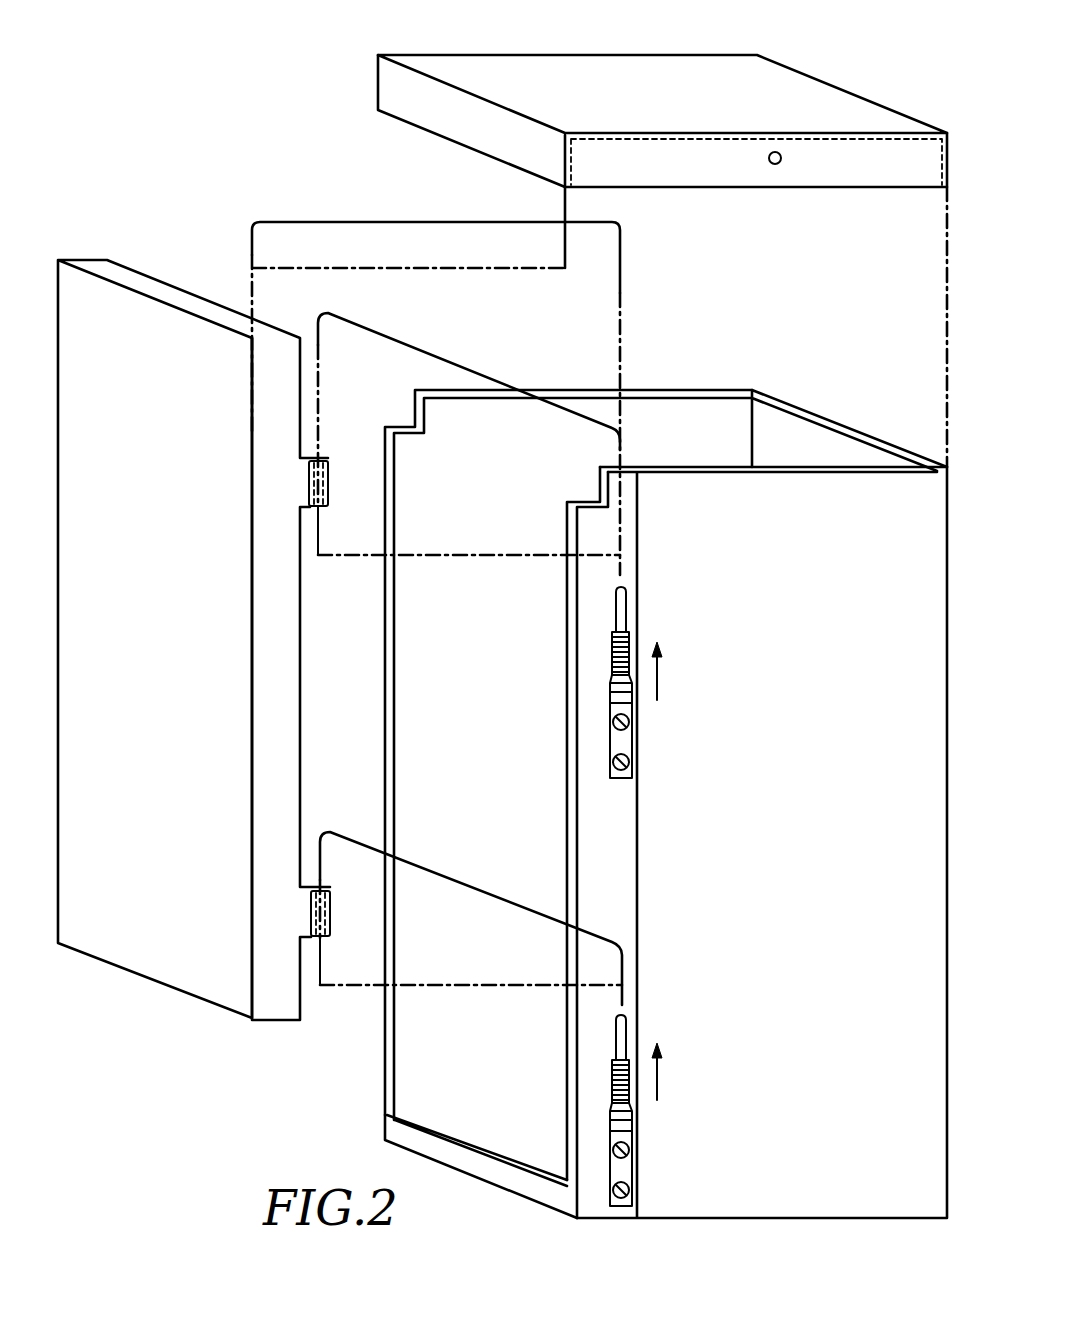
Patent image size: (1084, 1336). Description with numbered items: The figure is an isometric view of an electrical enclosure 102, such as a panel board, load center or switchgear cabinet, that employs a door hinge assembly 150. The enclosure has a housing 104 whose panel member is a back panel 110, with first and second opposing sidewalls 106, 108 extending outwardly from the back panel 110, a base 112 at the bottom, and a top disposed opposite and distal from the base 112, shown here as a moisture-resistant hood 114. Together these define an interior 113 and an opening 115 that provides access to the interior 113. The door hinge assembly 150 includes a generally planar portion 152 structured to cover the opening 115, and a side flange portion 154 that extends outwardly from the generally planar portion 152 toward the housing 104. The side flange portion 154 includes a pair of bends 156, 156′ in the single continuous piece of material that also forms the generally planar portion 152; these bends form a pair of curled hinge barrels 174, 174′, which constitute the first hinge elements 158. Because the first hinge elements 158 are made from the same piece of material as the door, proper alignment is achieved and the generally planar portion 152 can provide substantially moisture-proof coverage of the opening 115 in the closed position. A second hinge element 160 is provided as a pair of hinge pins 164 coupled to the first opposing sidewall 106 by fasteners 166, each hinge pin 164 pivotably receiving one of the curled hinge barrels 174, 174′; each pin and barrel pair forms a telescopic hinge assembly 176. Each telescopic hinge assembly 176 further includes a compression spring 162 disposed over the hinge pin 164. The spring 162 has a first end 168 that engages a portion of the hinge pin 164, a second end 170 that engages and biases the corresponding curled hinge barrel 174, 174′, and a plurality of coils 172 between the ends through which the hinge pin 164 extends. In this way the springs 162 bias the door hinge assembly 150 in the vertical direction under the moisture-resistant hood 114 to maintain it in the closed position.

The electrical enclosure 102 is at (734, 1271).
The housing 104 is at (857, 1195).
The first opposing sidewall 106 is at (808, 604).
The second opposing sidewall 108 is at (466, 496).
The back panel 110 is at (827, 420).
The base 112 is at (675, 1220).
The interior 113 is at (545, 818).
The moisture-resistant hood 114 is at (588, 77).
The opening 115 is at (396, 1048).
The door hinge assembly 150 is at (444, 222).
The generally planar portion 152 is at (136, 695).
The side flange portion 154 is at (262, 572).
The bend 156 is at (324, 903).
The bend 156′ is at (329, 466).
The first hinge element 158 is at (327, 442).
The second hinge element 160 is at (628, 888).
The compression spring 162 is at (614, 640).
The hinge pin 164 is at (628, 605).
The fasteners 166 is at (613, 724).
The first end 168 is at (601, 680).
The second end 170 is at (603, 625).
The coils 172 is at (614, 652).
The curled hinge barrel 174 is at (322, 940).
The curled hinge barrel 174′ is at (324, 508).
The telescopic hinge assembly 176 is at (476, 372).